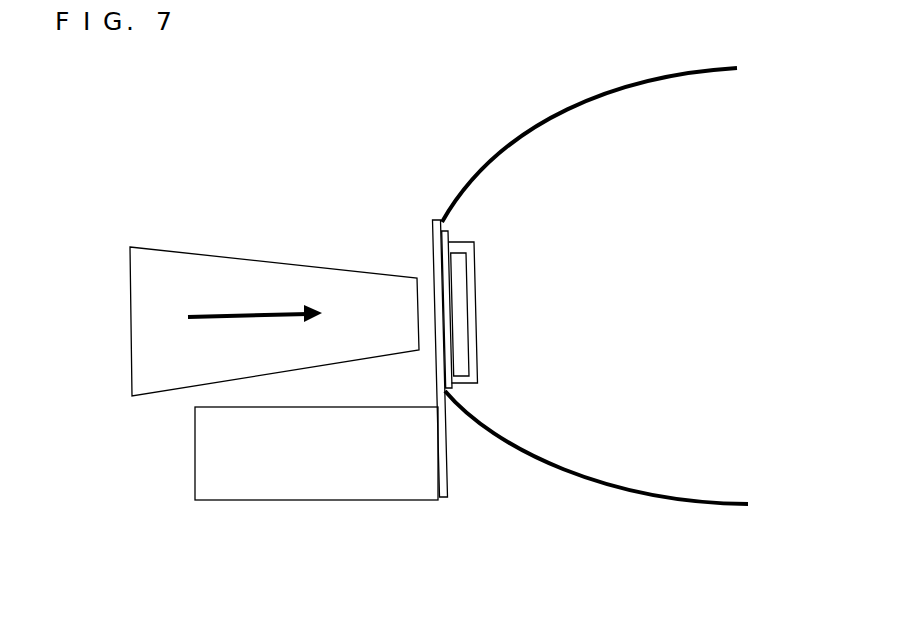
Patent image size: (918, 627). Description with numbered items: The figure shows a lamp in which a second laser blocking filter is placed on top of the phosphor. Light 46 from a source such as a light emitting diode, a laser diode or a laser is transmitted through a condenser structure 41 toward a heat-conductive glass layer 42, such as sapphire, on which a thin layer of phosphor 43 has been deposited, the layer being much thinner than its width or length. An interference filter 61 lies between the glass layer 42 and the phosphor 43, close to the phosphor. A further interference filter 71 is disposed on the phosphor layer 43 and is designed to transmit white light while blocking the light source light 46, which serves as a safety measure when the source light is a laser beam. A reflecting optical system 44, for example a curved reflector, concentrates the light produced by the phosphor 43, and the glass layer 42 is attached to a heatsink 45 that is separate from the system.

The condenser structure 41 is at (213, 250).
The heat-conductive glass layer 42 is at (432, 227).
The phosphor 43 is at (465, 365).
The reflecting optical system 44 is at (730, 502).
The heatsink 45 is at (273, 485).
The light 46 is at (187, 316).
The interference filter 61 is at (450, 238).
The further interference filter 71 is at (475, 307).